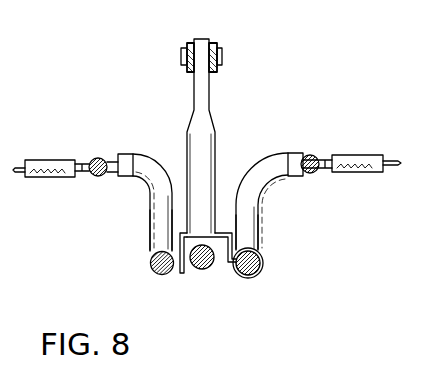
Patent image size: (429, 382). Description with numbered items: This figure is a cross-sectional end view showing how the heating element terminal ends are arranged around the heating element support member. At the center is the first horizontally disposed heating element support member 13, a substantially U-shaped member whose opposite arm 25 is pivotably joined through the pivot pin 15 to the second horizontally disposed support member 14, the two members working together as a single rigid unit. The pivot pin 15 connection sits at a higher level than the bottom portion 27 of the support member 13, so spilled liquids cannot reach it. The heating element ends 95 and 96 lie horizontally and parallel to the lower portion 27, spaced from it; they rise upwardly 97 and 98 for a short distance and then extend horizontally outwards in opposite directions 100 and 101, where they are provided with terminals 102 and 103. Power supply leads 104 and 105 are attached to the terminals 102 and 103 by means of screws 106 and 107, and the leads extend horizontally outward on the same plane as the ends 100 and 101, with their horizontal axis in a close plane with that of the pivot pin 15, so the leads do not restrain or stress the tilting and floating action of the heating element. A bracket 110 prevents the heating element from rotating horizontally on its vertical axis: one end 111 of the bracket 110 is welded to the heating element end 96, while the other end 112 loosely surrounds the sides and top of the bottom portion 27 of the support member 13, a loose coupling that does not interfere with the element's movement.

The first horizontally disposed heating element support member 13 is at (210, 275).
The second horizontally disposed support member 14 is at (210, 42).
The pivot pin 15 is at (222, 58).
The opposite arm 25 is at (213, 92).
The bottom portion 27 is at (190, 276).
The heating element end 95 is at (150, 266).
The heating element end 96 is at (254, 276).
The upwardly rising portion 97 is at (152, 225).
The upwardly rising portion 98 is at (254, 230).
The horizontally outward extending end 100 is at (130, 156).
The horizontally outward extending end 101 is at (272, 153).
The terminal 102 is at (106, 156).
The terminal 103 is at (295, 152).
The power supply lead 104 is at (30, 158).
The power supply lead 105 is at (365, 155).
The screw 106 is at (92, 160).
The screw 107 is at (312, 155).
The bracket 110 is at (262, 258).
The bracket end 111 is at (263, 270).
The bracket end 112 is at (180, 274).